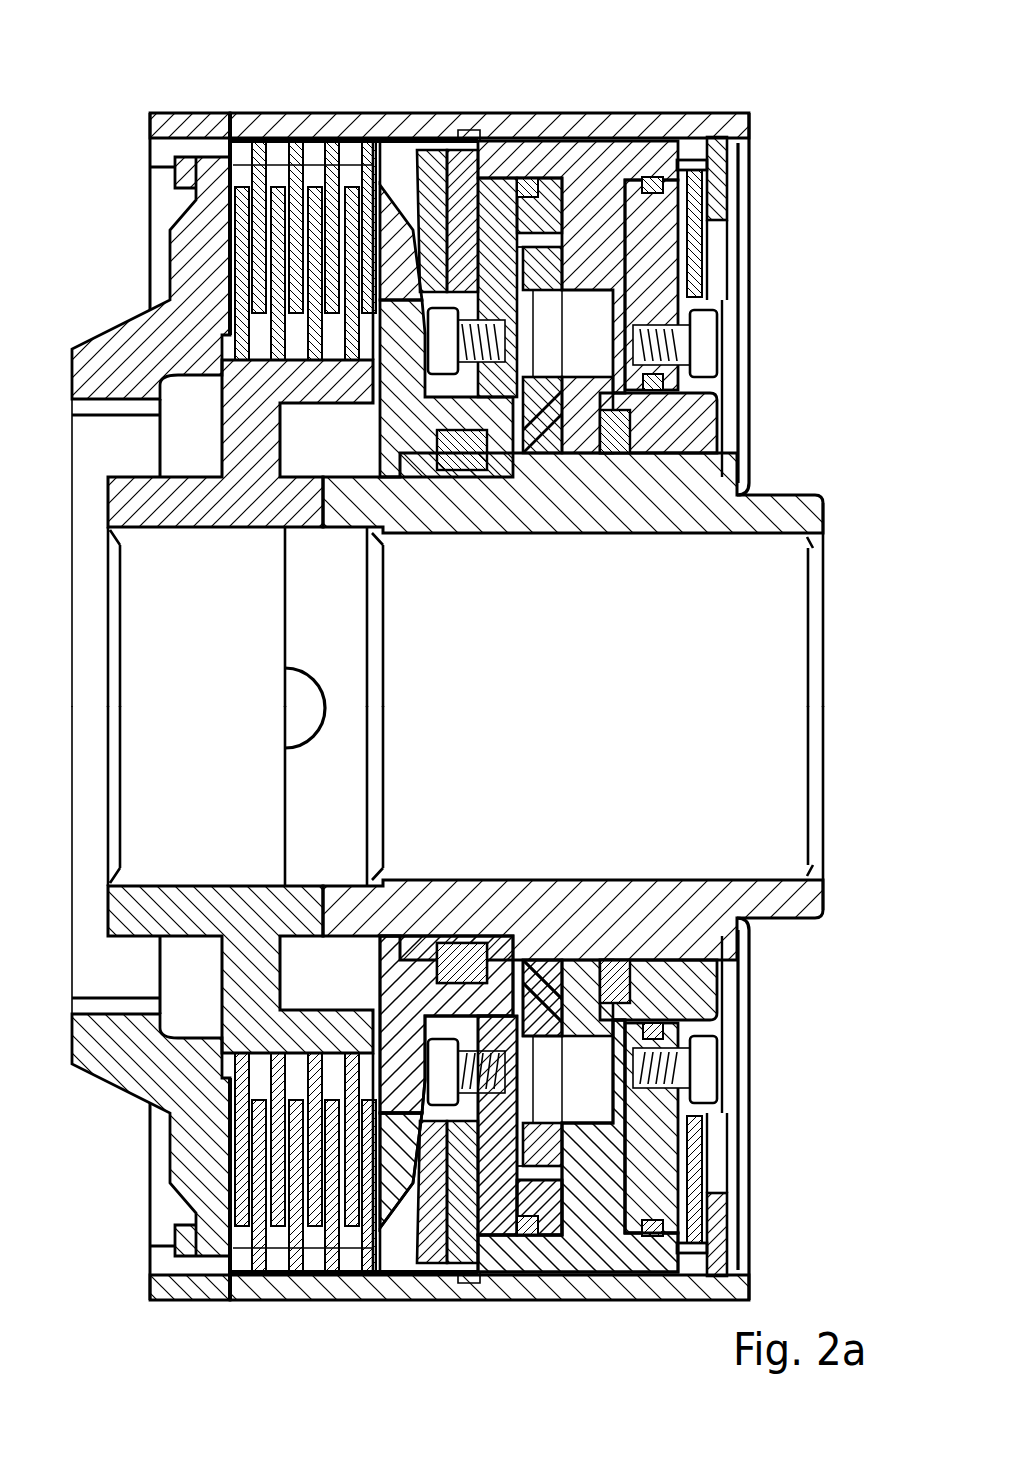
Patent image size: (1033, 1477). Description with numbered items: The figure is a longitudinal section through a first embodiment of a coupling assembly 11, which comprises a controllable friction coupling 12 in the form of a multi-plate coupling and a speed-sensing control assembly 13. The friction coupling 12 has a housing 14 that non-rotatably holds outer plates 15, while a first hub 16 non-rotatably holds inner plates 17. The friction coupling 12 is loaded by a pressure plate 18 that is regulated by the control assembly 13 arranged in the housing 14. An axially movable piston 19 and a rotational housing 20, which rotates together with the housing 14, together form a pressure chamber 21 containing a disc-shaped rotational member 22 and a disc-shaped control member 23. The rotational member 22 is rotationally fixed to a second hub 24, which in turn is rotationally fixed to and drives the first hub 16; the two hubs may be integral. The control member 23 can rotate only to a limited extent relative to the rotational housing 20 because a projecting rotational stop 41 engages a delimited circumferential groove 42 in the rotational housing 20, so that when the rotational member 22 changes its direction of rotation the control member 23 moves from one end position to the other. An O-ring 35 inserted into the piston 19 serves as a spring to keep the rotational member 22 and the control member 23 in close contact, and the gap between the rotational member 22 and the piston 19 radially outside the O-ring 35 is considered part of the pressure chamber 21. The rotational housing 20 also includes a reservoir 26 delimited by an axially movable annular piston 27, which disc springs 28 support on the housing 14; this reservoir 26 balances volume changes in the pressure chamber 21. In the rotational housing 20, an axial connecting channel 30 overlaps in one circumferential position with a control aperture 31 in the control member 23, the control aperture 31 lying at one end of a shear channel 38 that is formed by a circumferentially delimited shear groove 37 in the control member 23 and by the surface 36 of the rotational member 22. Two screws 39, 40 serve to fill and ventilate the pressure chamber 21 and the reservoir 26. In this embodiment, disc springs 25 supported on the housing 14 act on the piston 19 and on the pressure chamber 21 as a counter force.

The coupling assembly 11 is at (128, 98).
The friction coupling 12 is at (269, 99).
The control assembly 13 is at (583, 103).
The housing 14 is at (173, 120).
The outer plates 15 is at (252, 150).
The first hub 16 is at (142, 480).
The inner plates 17 is at (313, 195).
The pressure plate 18 is at (392, 215).
The piston 19 is at (498, 207).
The rotational housing 20 is at (597, 203).
The pressure chamber 21 is at (572, 247).
The rotational member 22 is at (506, 265).
The control member 23 is at (541, 440).
The second hub 24 is at (712, 478).
The disc springs 25 is at (434, 180).
The reservoir 26 is at (661, 215).
The annular piston 27 is at (713, 180).
The disc springs 28 is at (692, 248).
The axial connecting channel 30 is at (597, 360).
The control aperture 31 is at (551, 355).
The O-ring 35 is at (501, 1020).
The surface 36 is at (591, 1115).
The shear groove 37 is at (505, 1235).
The shear channel 38 is at (546, 1195).
The screw 39 is at (441, 365).
The screw 40 is at (702, 333).
The rotational stop 41 is at (583, 1010).
The circumferential groove 42 is at (602, 1010).